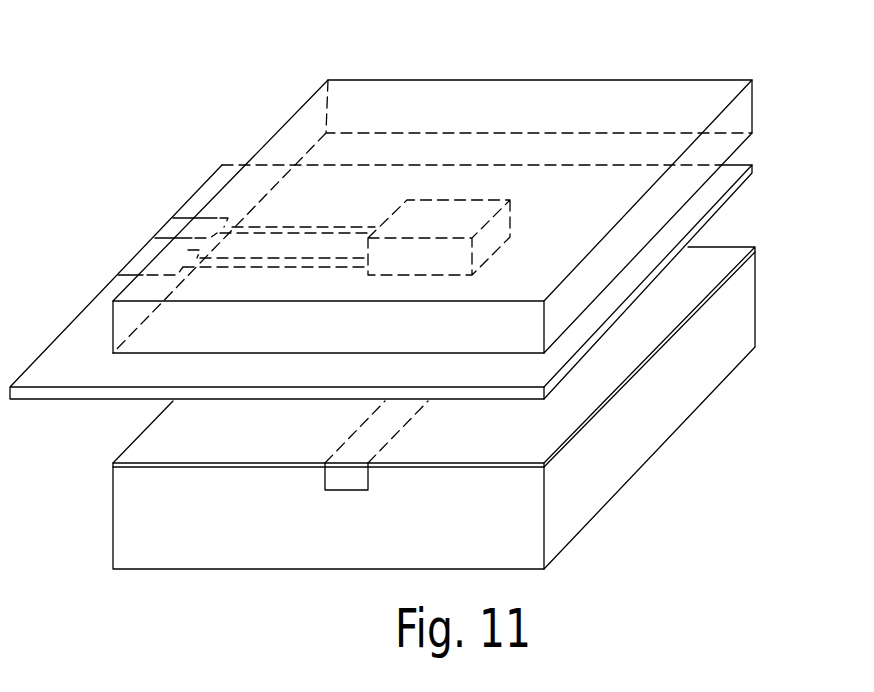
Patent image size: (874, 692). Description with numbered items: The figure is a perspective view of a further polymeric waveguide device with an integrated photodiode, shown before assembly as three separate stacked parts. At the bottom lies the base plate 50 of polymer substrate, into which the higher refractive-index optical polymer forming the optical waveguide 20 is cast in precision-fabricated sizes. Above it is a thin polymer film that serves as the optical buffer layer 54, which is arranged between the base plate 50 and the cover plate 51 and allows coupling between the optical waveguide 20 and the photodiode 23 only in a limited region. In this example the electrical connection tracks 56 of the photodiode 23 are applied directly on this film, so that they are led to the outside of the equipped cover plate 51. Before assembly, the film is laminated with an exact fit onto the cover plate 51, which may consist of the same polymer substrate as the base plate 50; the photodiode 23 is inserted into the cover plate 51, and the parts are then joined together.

The optical waveguide 20 is at (318, 502).
The photodiode 23 is at (449, 186).
The base plate 50 is at (638, 447).
The cover plate 51 is at (744, 114).
The optical buffer layer 54 is at (696, 222).
The electrical connection tracks 56 is at (126, 246).